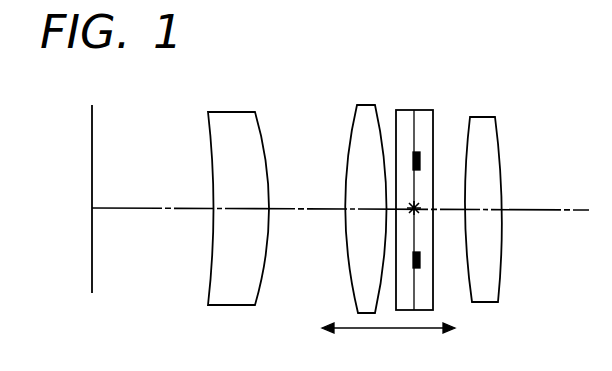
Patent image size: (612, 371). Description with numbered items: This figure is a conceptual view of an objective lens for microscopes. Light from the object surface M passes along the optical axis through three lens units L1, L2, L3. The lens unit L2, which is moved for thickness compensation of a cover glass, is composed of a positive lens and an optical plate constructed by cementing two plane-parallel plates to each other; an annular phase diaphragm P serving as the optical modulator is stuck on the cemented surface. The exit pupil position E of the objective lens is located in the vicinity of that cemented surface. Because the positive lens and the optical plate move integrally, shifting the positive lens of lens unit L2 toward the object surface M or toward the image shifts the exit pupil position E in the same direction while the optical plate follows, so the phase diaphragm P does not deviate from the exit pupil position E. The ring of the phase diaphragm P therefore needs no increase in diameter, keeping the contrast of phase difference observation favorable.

The object surface M is at (92, 256).
The first lens unit L1 is at (270, 100).
The second lens unit L2 is at (430, 94).
The annular phase diaphragm P is at (433, 112).
The exit pupil position E is at (416, 206).
The third lens unit L3 is at (508, 103).